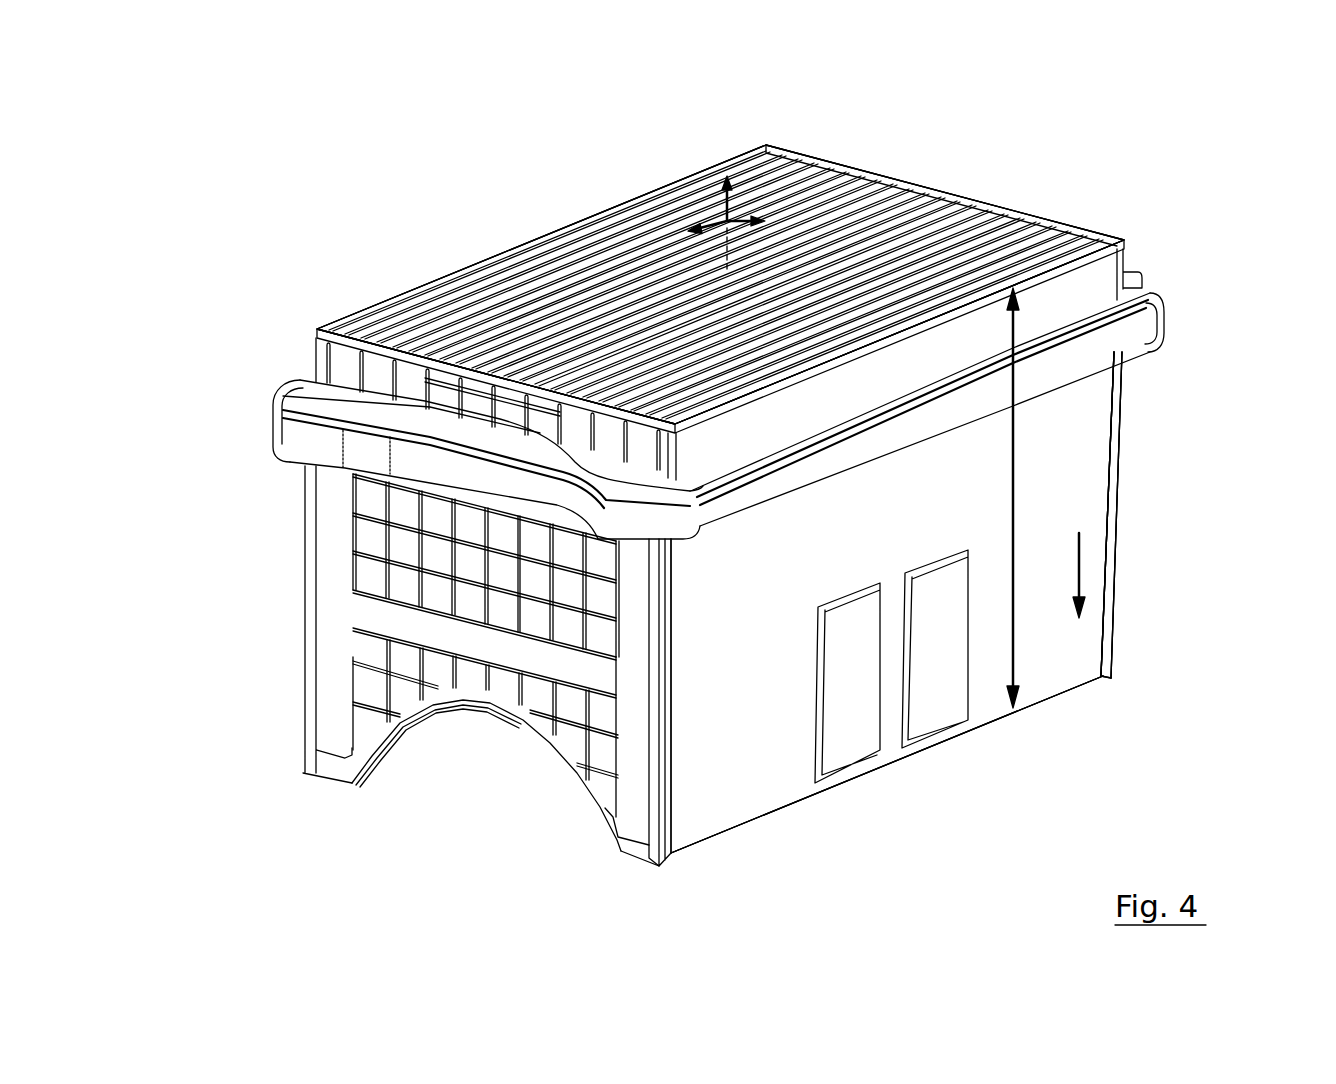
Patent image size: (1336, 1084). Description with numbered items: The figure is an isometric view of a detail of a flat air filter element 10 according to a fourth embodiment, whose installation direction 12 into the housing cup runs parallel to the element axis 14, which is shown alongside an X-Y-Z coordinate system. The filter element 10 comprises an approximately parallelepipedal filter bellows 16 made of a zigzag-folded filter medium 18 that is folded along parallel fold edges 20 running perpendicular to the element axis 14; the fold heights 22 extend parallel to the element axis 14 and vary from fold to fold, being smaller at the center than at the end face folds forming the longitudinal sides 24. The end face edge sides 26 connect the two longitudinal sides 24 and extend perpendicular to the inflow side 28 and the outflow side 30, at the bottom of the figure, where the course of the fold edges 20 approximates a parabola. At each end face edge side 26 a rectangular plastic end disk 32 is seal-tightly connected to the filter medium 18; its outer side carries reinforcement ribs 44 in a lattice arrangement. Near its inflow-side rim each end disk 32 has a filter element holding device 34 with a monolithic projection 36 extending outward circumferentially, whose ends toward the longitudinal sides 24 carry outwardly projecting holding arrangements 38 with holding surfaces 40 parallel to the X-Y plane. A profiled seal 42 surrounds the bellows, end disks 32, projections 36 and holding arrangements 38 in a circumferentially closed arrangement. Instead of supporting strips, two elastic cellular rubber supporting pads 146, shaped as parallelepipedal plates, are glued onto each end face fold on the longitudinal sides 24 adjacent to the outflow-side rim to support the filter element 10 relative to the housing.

The filter element 10 is at (262, 149).
The installation direction 12 is at (1083, 580).
The element axis 14 is at (727, 263).
The filter bellows 16 is at (519, 256).
The filter medium 18 is at (1053, 630).
The fold edges 20 is at (610, 232).
The fold heights 22 is at (1020, 413).
The longitudinal sides 24 is at (1077, 426).
The end face edge sides 26 is at (358, 337).
The inflow side 28 is at (437, 300).
The outflow side 30 is at (475, 715).
The end disk 32 is at (560, 477).
The filter element holding device 34 is at (294, 393).
The projection 36 is at (470, 440).
The holding arrangement 38 is at (312, 405).
The holding surface 40 is at (635, 470).
The seal 42 is at (1151, 322).
The reinforcement ribs 44 is at (383, 694).
The supporting pads 146 is at (845, 750).